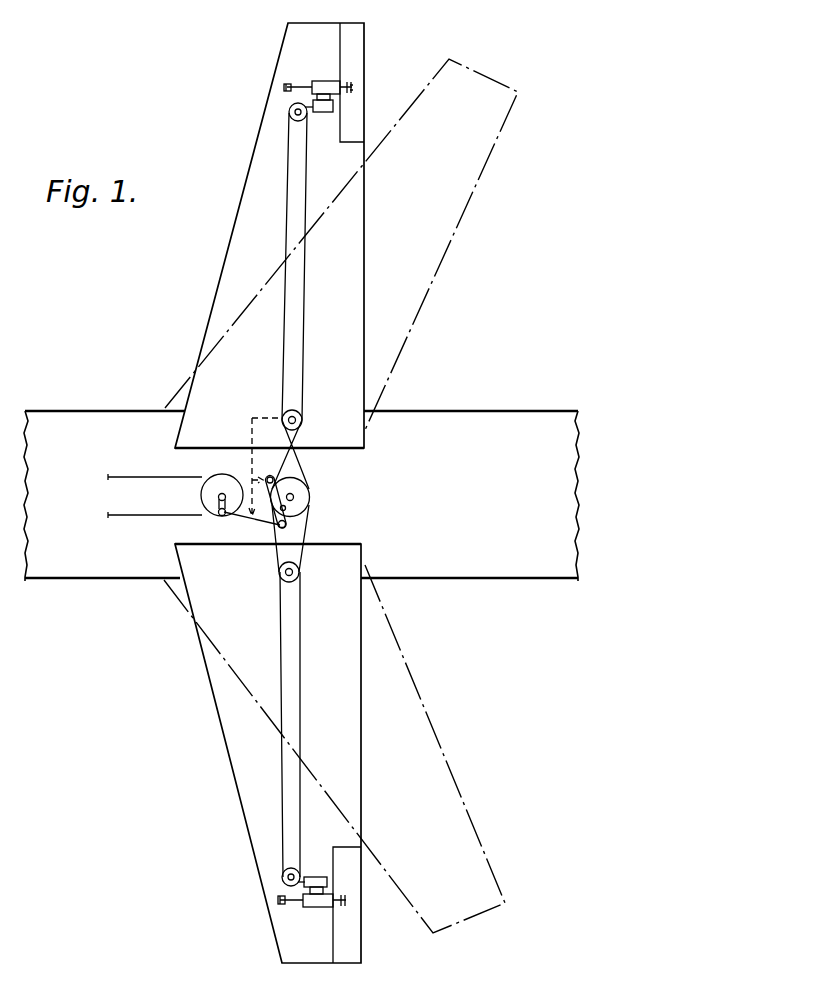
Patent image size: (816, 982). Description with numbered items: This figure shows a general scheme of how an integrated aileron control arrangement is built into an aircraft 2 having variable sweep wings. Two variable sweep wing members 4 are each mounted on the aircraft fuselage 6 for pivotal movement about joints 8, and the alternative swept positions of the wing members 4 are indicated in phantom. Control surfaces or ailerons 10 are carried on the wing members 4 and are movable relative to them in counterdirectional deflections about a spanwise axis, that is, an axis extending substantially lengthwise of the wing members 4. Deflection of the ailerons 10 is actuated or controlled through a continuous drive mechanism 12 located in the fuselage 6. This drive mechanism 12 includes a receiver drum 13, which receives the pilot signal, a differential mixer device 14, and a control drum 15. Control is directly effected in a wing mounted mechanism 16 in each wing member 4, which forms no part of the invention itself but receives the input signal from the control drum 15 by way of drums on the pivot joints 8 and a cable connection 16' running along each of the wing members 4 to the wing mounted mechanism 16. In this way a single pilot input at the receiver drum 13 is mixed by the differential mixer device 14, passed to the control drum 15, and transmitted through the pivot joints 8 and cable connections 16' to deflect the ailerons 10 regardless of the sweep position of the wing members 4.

The aircraft 2 is at (491, 597).
The variable sweep wing members 4 is at (336, 281).
The aircraft fuselage 6 is at (484, 508).
The joints 8 is at (302, 427).
The ailerons 10 is at (359, 58).
The continuous drive mechanism 12 is at (319, 500).
The receiver drum 13 is at (222, 474).
The differential mixer device 14 is at (285, 524).
The control drum 15 is at (303, 486).
The wing mounted mechanism 16 is at (315, 495).
The cable connection 16' is at (295, 494).